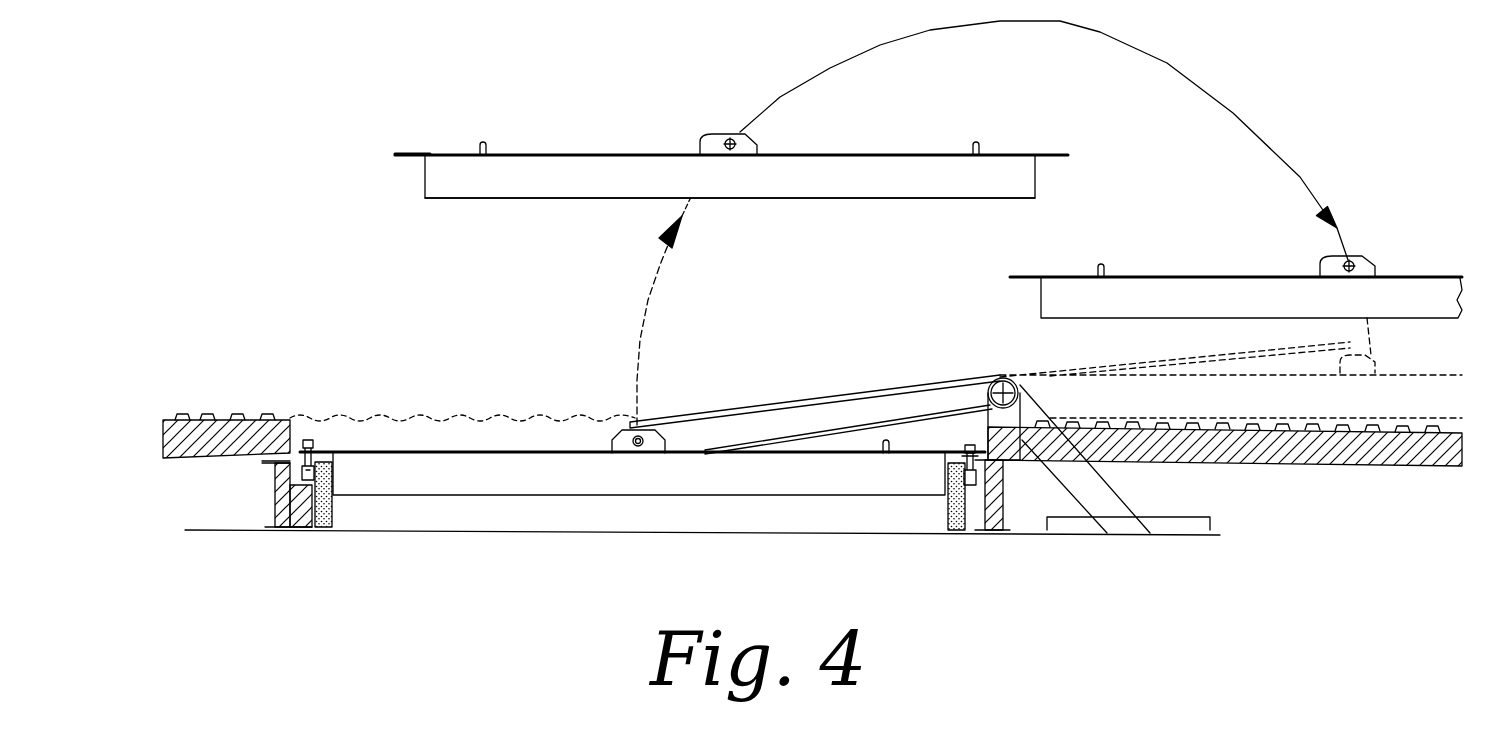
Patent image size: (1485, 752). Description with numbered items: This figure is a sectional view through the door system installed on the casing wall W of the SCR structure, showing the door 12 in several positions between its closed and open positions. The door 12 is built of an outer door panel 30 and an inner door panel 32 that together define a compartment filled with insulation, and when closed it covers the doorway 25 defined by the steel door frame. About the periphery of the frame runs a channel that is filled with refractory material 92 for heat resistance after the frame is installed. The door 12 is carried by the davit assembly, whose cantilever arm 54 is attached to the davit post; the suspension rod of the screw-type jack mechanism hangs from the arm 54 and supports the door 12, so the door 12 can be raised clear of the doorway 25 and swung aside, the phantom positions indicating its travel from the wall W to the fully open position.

The door 12 is at (541, 154).
The outer door panel 30 is at (398, 157).
The inner door panel 32 is at (552, 200).
The cantilever arm 54 is at (885, 400).
The doorway 25 is at (426, 503).
The refractory material 92 is at (950, 510).
The casing wall W is at (1440, 428).